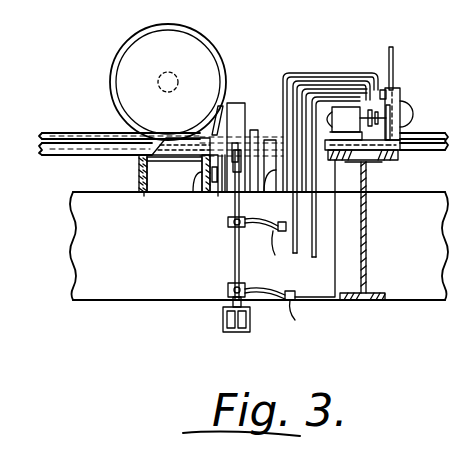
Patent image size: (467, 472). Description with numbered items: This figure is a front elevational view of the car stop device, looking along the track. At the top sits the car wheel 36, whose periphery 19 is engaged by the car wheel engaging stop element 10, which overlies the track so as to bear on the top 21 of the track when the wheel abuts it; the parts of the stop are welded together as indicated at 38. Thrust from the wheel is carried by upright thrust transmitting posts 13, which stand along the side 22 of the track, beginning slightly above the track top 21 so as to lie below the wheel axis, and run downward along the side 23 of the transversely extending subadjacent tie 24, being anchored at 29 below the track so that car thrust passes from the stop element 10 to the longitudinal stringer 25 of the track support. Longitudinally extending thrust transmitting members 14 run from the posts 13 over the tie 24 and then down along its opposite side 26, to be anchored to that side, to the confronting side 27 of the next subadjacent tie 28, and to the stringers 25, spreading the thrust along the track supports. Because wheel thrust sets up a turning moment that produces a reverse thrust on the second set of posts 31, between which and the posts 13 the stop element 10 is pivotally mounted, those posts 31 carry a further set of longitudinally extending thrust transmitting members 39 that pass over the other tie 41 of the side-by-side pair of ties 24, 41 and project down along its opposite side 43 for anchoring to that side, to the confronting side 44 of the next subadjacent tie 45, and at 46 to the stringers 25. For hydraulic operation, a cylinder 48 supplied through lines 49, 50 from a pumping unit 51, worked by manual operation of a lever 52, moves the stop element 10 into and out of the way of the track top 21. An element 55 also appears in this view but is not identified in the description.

The car wheel engaging stop element 10 is at (241, 103).
The upright thrust transmitting posts 13 is at (232, 225).
The longitudinally extending thrust transmitting members 14 is at (272, 166).
The car wheel periphery 19 is at (216, 50).
The top of the track 21 is at (100, 133).
The side of the track 22 is at (63, 145).
The side of the subadjacent tie 23 is at (257, 148).
The subadjacent tie 24 is at (257, 194).
The longitudinal stringer 25 is at (121, 299).
The opposite side of the tie 26 is at (268, 201).
The confronting side of the next subadjacent tie 27 is at (357, 178).
The next subadjacent tie 28 is at (331, 191).
The anchoring point of the posts 29 is at (232, 196).
The posts 31 is at (215, 196).
The car wheel 36 is at (126, 71).
The welds 38 is at (200, 167).
The longitudinally extending thrust transmitting members 39 is at (181, 146).
The other tie of the pair 41 is at (216, 195).
The opposite side of the other tie 43 is at (200, 193).
The confronting side of the next subadjacent tie 44 is at (137, 178).
The next subadjacent tie 45 is at (145, 193).
The anchoring point to the stringers 46 is at (166, 194).
The cylinder 48 is at (230, 272).
The hydraulic line 49 is at (273, 251).
The hydraulic line 50 is at (290, 246).
The pumping unit 51 is at (402, 109).
The lever 52 is at (394, 70).
The link 55 is at (223, 106).